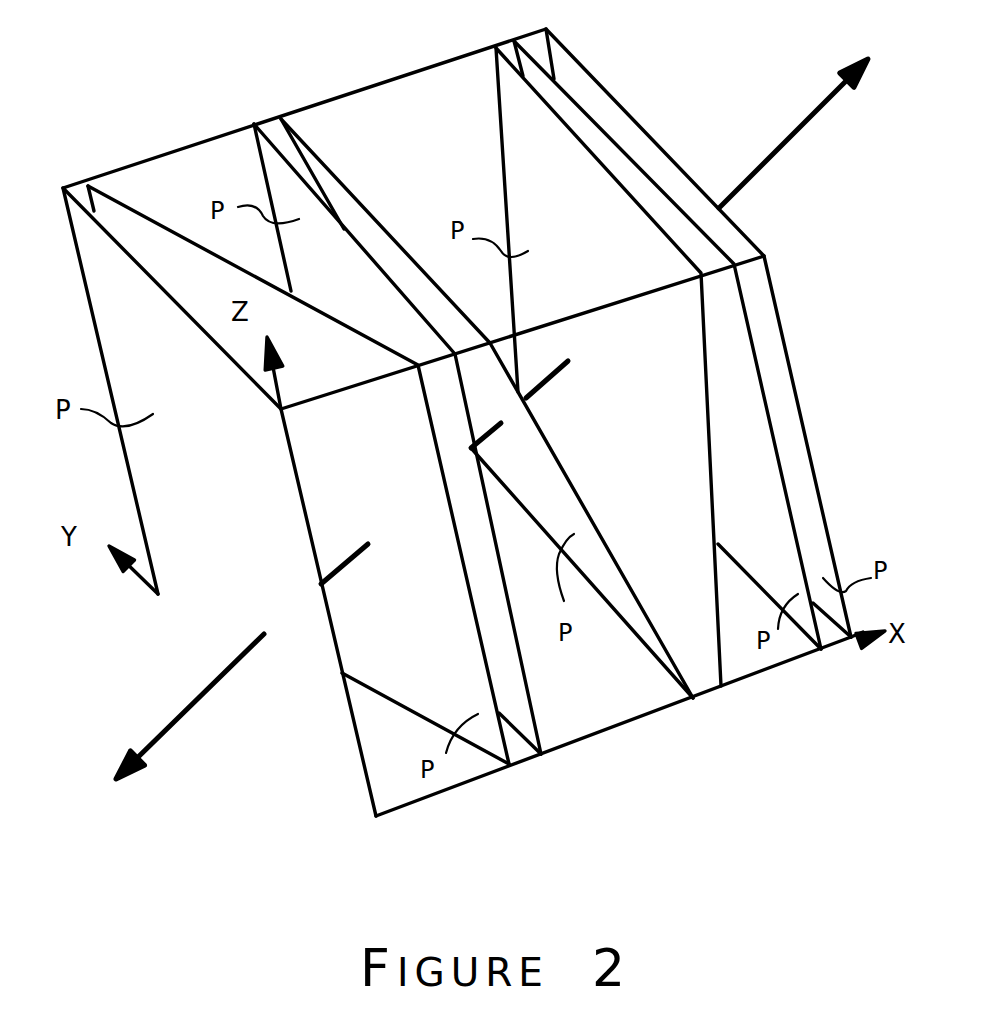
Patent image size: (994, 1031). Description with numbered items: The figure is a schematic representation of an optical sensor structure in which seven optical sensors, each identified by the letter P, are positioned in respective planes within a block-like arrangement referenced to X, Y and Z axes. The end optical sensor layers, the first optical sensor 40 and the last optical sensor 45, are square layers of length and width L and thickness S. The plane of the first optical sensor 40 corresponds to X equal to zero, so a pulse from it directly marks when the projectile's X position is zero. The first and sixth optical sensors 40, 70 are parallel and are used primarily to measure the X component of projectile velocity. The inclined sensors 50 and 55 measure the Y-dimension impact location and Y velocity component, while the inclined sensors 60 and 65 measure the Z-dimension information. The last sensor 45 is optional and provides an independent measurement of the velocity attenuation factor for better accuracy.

The first optical sensor 40 is at (320, 730).
The last optical sensor 45 is at (811, 520).
The inclined optical sensor 50 is at (152, 240).
The inclined optical sensor 55 is at (278, 173).
The inclined optical sensor 60 is at (542, 493).
The inclined optical sensor 65 is at (523, 168).
The sixth optical sensor 70 is at (770, 542).